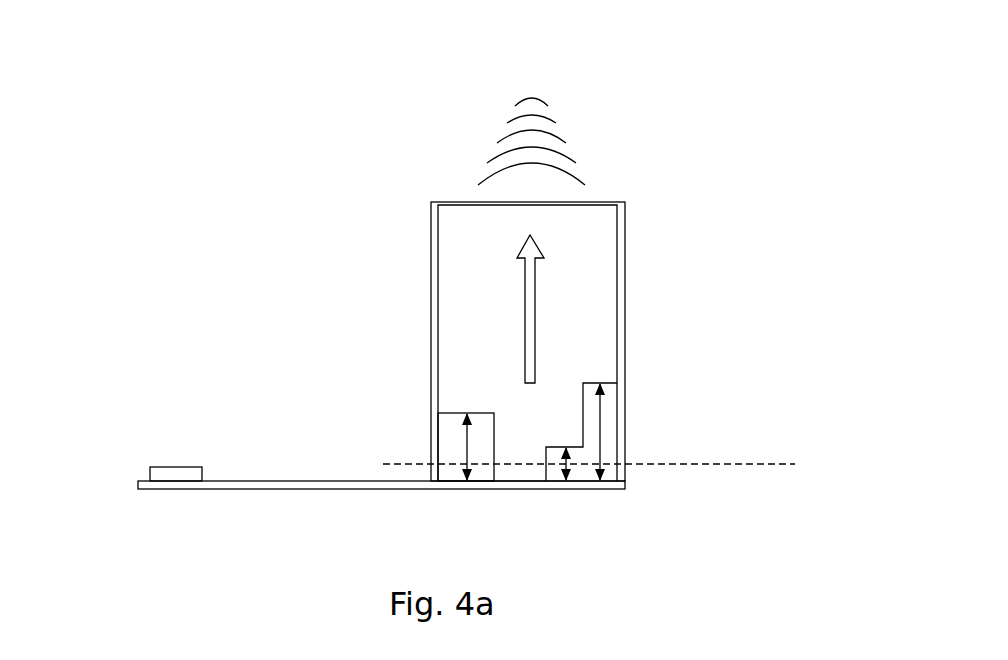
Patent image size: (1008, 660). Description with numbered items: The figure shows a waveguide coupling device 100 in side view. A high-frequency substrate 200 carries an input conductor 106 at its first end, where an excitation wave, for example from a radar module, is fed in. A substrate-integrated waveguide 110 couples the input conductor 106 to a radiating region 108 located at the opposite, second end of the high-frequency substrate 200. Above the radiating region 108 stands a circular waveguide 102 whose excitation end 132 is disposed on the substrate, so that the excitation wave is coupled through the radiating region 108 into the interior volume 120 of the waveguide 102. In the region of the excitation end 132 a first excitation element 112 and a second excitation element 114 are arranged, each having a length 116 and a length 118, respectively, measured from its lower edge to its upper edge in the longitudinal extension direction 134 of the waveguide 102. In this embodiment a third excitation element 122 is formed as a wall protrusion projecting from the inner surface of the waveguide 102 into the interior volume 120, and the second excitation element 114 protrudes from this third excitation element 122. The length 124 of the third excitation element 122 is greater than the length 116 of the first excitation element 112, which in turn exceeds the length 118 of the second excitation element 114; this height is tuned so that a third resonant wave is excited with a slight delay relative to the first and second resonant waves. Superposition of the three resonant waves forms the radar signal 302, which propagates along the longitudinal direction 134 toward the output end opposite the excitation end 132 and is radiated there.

The waveguide coupling device 100 is at (748, 190).
The waveguide 102 is at (627, 210).
The input conductor 106 is at (163, 472).
The radiating region 108 is at (530, 490).
The substrate-integrated waveguide 110 is at (310, 490).
The first excitation element 112 is at (482, 426).
The second excitation element 114 is at (568, 462).
The length of the first excitation element 116 is at (466, 453).
The length of the second excitation element 118 is at (623, 487).
The interior volume 120 is at (585, 337).
The third excitation element 122 is at (604, 410).
The length of the third excitation element 124 is at (597, 433).
The excitation end 132 is at (630, 483).
The longitudinal extension direction 134 is at (535, 297).
The high-frequency substrate 200 is at (258, 473).
The radar signal 302 is at (571, 132).